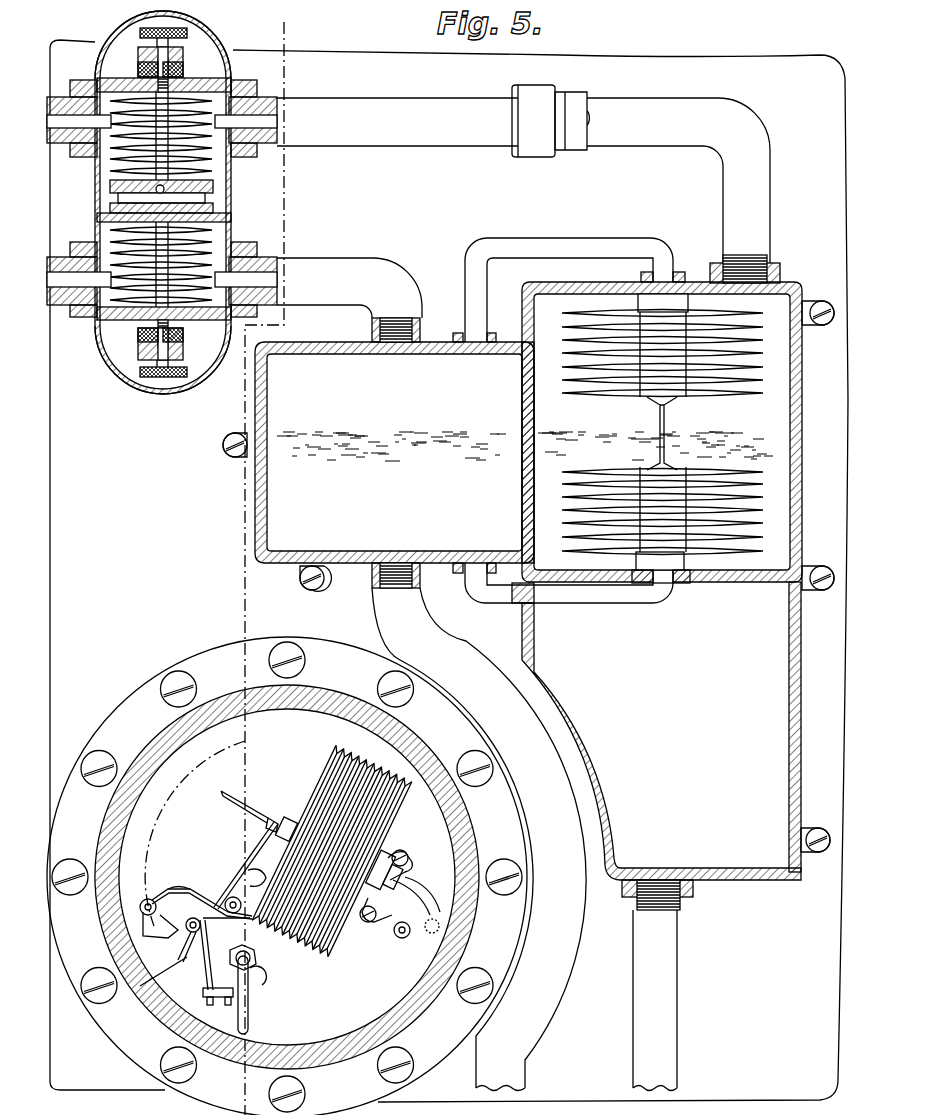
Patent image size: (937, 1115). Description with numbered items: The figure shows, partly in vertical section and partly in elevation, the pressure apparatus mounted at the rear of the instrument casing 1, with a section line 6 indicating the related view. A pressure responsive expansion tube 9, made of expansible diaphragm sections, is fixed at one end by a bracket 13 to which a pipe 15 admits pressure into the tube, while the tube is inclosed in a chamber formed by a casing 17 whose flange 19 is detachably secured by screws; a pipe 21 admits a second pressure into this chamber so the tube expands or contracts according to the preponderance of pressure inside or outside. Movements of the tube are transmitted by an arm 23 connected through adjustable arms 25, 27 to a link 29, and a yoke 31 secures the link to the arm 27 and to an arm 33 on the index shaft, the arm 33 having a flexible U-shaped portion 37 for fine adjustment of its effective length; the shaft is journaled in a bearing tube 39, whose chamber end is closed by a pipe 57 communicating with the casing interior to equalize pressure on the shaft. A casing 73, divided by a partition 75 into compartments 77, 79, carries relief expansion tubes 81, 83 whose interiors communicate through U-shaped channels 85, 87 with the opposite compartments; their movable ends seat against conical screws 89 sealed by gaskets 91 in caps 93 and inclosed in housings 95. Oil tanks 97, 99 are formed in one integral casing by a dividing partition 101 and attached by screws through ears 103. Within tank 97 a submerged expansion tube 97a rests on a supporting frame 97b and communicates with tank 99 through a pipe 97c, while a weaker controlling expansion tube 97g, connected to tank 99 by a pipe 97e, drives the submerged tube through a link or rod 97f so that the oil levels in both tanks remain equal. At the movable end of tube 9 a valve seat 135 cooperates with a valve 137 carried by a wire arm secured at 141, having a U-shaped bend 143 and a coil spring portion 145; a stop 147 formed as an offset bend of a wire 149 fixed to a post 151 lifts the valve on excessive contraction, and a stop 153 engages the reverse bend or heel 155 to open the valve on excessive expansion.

The casing 1 is at (690, 66).
The section line 6 is at (286, 27).
The pressure responsive expansion tube 9 is at (328, 770).
The bracket 13 is at (410, 880).
The pipe 15 is at (61, 106).
The casing 17 is at (112, 815).
The flange 19 is at (125, 713).
The pipe 21 is at (63, 306).
The arm 23 is at (255, 868).
The arm 25 is at (228, 899).
The arm 27 is at (200, 975).
The link 29 is at (218, 1005).
The yoke 31 is at (203, 993).
The arm 33 is at (212, 960).
The flexible yoke or U shaped portion 37 is at (268, 979).
The bearing tube 39 is at (256, 959).
The pipe 57 is at (249, 1000).
The casing 73 is at (100, 232).
The partition 75 is at (113, 193).
The compartment 77 is at (232, 83).
The compartment 79 is at (226, 318).
The expansion tube 81 is at (205, 160).
The expansion tube 83 is at (205, 232).
The U-shaped channel 85 is at (213, 187).
The U-shaped channel 87 is at (110, 208).
The screws 89 is at (165, 50).
The gaskets 91 is at (156, 53).
The caps 93 is at (145, 63).
The housings 95 is at (208, 30).
The tank 97 is at (805, 418).
The expansion tube 97a is at (765, 510).
The supporting frame 97b is at (717, 584).
The pipe 97c is at (585, 604).
The pipe 97e is at (575, 243).
The link or rod 97f is at (668, 418).
The controlling expansion tube 97g is at (762, 386).
The tank 99 is at (255, 505).
The dividing partition 101 is at (522, 393).
The ears 103 is at (822, 301).
The valve seat 135 is at (285, 821).
The valve 137 is at (272, 820).
The securing point 141 is at (248, 877).
The U-shaped bend 143 is at (222, 792).
The coil spring portion 145 is at (186, 934).
The stop 147 is at (166, 886).
The wire 149 is at (172, 888).
The post 151 is at (140, 906).
The stop 153 is at (142, 925).
The reverse bend or heel 155 is at (140, 986).